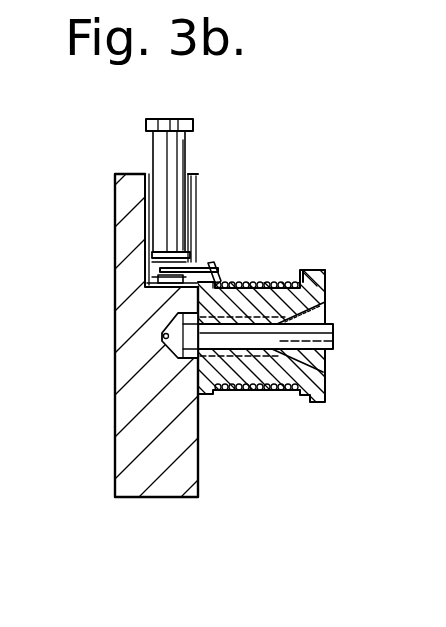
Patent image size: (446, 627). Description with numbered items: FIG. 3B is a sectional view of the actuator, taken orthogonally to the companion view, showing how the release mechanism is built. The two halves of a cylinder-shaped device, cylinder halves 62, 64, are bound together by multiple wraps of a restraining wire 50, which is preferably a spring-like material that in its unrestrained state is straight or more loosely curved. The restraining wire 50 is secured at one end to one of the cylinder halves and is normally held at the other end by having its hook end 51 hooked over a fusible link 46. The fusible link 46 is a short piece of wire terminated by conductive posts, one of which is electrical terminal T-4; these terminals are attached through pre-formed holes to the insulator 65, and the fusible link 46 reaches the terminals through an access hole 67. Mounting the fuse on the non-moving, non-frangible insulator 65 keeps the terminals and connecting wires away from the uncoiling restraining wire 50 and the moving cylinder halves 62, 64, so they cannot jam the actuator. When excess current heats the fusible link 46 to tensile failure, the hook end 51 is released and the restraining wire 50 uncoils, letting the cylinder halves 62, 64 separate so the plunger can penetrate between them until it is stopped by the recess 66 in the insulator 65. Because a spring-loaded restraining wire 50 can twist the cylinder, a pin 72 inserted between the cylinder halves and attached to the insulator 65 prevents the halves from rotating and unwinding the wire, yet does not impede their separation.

The electrical terminal T-4 is at (190, 149).
The fusible link 46 is at (190, 257).
The hook end of restraining wire 51 is at (222, 267).
The cylinder half 64 is at (317, 270).
The access hole 67 is at (150, 272).
The recess in insulator 66 is at (163, 338).
The insulator 65 is at (130, 422).
The restraining wire 50 is at (262, 390).
The cylinder half 62 is at (313, 382).
The pin 72 is at (337, 330).